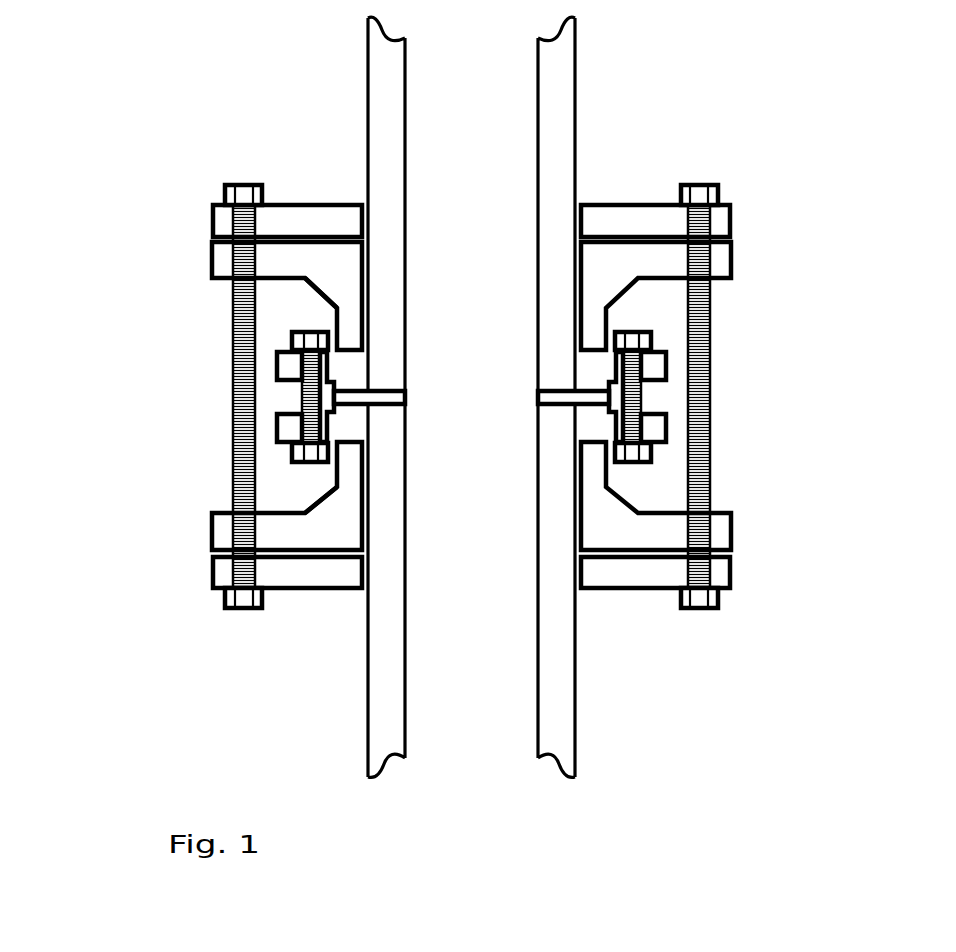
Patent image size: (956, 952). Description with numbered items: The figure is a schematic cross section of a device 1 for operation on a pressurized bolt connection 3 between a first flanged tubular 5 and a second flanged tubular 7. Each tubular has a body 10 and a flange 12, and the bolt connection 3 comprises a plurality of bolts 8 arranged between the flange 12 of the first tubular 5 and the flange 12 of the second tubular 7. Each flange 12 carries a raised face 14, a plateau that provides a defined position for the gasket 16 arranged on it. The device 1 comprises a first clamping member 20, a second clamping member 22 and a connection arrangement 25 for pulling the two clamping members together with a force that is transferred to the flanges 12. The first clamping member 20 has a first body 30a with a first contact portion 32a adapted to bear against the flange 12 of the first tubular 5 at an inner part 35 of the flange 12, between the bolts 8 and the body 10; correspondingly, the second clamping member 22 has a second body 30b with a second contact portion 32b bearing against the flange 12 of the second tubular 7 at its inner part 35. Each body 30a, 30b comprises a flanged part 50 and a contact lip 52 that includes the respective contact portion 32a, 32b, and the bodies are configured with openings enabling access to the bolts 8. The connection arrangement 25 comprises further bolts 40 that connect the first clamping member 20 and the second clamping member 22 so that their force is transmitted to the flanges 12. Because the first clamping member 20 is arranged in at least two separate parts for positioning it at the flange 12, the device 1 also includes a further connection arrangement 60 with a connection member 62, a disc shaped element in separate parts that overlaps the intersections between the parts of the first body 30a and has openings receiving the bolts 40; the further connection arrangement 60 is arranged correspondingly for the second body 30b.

The device 1 is at (106, 112).
The connection arrangement 25 is at (128, 202).
The further connection arrangement 60 is at (160, 245).
The connection member 62 is at (223, 221).
The bolts 40 is at (201, 396).
The first clamping member 20 is at (285, 228).
The second clamping member 22 is at (295, 566).
The flanged part 50 is at (222, 396).
The first body 30a is at (307, 256).
The second body 30b is at (320, 533).
The contact lip 52 is at (217, 395).
The first contact portion 32a is at (350, 331).
The second contact portion 32b is at (353, 475).
The bolt connection 3 is at (273, 373).
The bolts 8 is at (312, 382).
The inner part 35 is at (347, 360).
The first flanged tubular 5 is at (557, 125).
The second flanged tubular 7 is at (558, 672).
The body 10 is at (562, 295).
The flange 12 is at (600, 367).
The raised face 14 is at (587, 383).
The gasket 16 is at (573, 407).